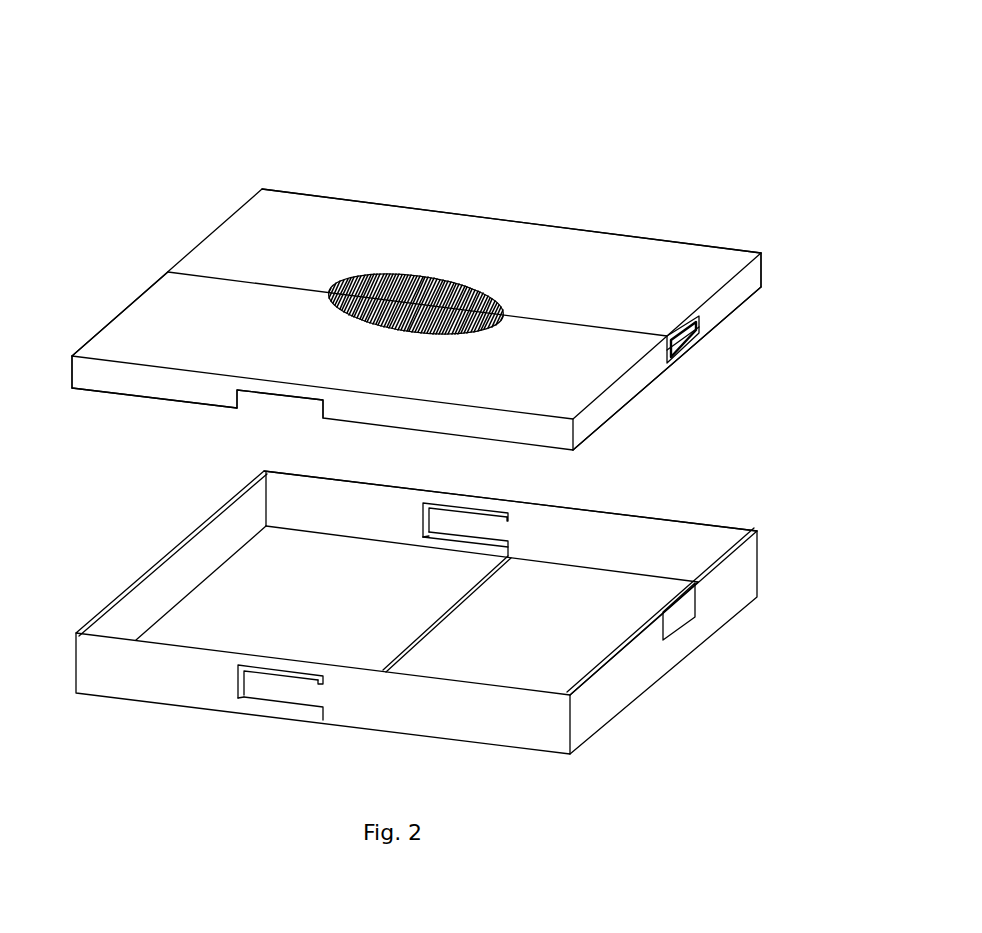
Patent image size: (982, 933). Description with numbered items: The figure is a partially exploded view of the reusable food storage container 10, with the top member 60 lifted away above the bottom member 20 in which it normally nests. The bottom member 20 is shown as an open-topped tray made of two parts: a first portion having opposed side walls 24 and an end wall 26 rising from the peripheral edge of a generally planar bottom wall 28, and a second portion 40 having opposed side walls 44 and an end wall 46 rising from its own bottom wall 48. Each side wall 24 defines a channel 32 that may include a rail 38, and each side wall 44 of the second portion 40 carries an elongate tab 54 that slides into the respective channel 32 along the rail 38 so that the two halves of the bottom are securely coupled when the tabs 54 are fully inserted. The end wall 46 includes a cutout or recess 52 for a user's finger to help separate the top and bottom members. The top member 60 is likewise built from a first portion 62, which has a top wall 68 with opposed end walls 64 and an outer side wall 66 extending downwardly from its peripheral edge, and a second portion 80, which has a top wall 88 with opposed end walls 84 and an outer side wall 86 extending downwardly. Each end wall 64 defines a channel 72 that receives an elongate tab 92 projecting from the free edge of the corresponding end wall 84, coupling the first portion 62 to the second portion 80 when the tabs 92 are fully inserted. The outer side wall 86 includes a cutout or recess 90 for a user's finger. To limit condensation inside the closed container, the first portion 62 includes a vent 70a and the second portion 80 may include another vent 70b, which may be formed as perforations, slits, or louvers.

The food storage container 10 is at (678, 88).
The bottom member 20 is at (150, 780).
The side walls 24 is at (323, 500).
The end wall 26 is at (163, 580).
The bottom wall 28 is at (282, 595).
The channel 32 is at (438, 510).
The rail 38 is at (465, 547).
The second portion 40 is at (700, 503).
The side walls 44 is at (610, 532).
The end wall 46 is at (618, 690).
The bottom wall 48 is at (584, 631).
The cutout or recess 52 is at (668, 633).
The tab 54 is at (470, 513).
The top member 60 is at (160, 225).
The first portion 62 is at (232, 197).
The end walls 64 is at (735, 295).
The outer side wall 66 is at (600, 230).
The top wall 68 is at (312, 217).
The vent 70a is at (415, 275).
The vent 70b is at (443, 327).
The channel 72 is at (695, 337).
The second portion 80 is at (105, 303).
The end walls 84 is at (620, 397).
The outer side wall 86 is at (130, 380).
The top wall 88 is at (120, 337).
The cutout or recess 90 is at (257, 397).
The tab 92 is at (680, 343).